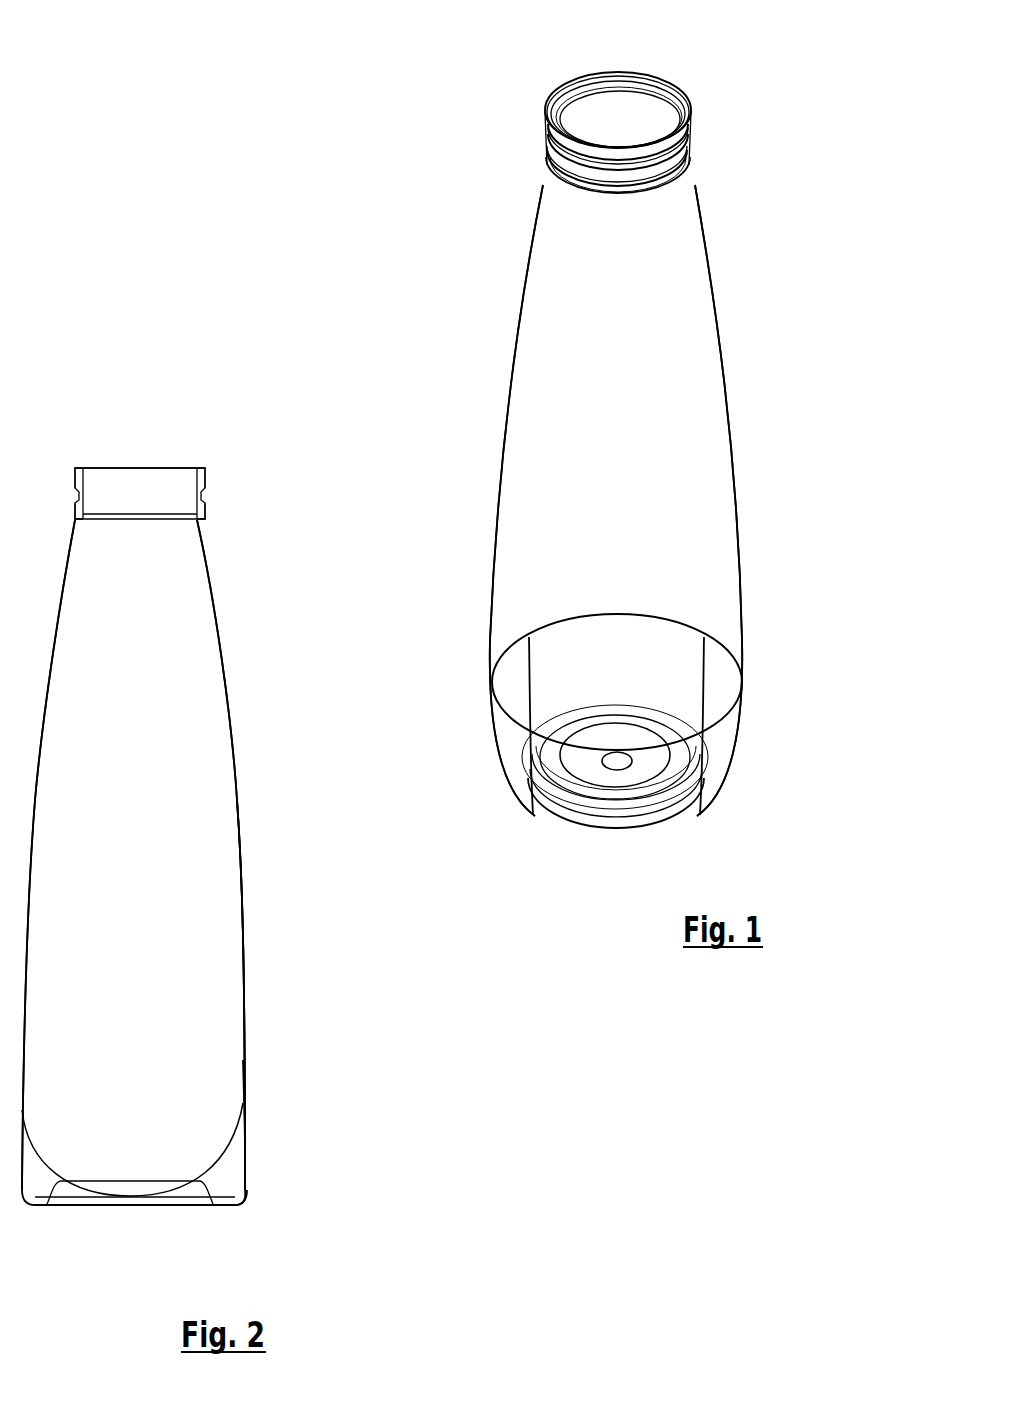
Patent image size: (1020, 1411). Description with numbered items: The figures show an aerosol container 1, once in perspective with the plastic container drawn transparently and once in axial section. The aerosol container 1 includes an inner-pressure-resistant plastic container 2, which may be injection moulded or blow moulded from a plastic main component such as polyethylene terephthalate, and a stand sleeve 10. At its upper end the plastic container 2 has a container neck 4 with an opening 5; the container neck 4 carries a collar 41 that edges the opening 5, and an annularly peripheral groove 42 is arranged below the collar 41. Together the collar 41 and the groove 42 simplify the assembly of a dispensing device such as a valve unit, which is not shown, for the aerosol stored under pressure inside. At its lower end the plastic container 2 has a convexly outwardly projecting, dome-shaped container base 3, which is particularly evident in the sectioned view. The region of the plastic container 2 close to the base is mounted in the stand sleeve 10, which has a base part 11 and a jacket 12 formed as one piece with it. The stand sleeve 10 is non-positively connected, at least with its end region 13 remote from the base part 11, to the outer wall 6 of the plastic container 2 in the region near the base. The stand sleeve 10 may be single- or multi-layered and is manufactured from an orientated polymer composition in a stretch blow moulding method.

In FIG. 1, the aerosol container 1 is at (490, 313).
In FIG. 2, the aerosol container 1 is at (248, 695).
In FIG. 1, the plastic container 2 is at (738, 332).
In FIG. 2, the plastic container 2 is at (237, 770).
In FIG. 2, the container base 3 is at (48, 1155).
In FIG. 1, the container neck 4 is at (690, 97).
In FIG. 2, the container neck 4 is at (227, 480).
In FIG. 1, the opening 5 is at (627, 74).
In FIG. 2, the opening 5 is at (88, 477).
In FIG. 2, the outer wall 6 is at (240, 889).
In FIG. 1, the stand sleeve 10 is at (742, 710).
In FIG. 2, the stand sleeve 10 is at (256, 1197).
In FIG. 2, the base part 11 is at (106, 1208).
In FIG. 2, the jacket 12 is at (248, 1146).
In FIG. 2, the end region 13 is at (250, 1106).
In FIG. 2, the collar 41 is at (205, 470).
In FIG. 1, the annularly peripheral groove 42 is at (693, 150).
In FIG. 2, the annularly peripheral groove 42 is at (205, 490).